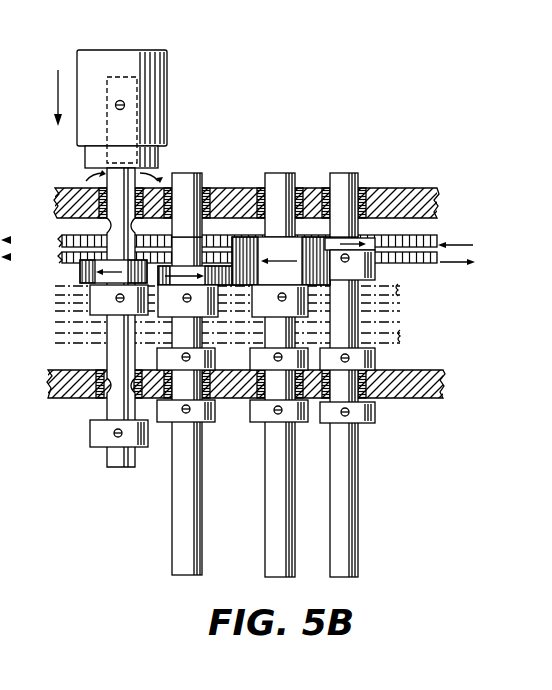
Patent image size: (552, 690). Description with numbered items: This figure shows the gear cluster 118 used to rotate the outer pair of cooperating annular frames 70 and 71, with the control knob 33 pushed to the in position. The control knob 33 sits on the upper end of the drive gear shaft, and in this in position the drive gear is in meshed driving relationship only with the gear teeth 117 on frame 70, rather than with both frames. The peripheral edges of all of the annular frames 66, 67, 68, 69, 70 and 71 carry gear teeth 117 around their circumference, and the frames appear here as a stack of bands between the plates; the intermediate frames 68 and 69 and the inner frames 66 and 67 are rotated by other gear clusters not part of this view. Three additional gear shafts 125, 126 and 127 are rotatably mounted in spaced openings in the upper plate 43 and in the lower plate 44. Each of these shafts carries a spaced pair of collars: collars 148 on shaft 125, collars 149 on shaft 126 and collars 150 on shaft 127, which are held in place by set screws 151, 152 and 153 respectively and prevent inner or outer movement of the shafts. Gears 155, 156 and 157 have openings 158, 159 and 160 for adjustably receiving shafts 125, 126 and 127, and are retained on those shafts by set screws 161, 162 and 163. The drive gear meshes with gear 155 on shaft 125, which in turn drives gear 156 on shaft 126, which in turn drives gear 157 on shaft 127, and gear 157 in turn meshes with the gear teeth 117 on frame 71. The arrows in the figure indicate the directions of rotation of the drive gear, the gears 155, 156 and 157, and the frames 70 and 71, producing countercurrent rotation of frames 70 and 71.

The control knob 33 is at (168, 118).
The gear cluster 118 is at (246, 120).
The gear 155 is at (222, 190).
The gear 156 is at (255, 190).
The gear 157 is at (376, 192).
The plate 43 is at (397, 190).
The plate 44 is at (397, 401).
The gear teeth 117 is at (66, 243).
The annular frame 71 is at (443, 226).
The annular frame 69 is at (60, 288).
The annular frame 68 is at (60, 313).
The annular frame 67 is at (60, 337).
The annular frame 66 is at (52, 350).
The annular frame 70 is at (400, 289).
The set screw 163 is at (350, 262).
The opening 160 is at (330, 300).
The opening 159 is at (392, 350).
The opening 158 is at (183, 307).
The set screw 161 is at (216, 312).
The set screw 162 is at (281, 293).
The set screw 152 is at (278, 356).
The set screw 151 is at (188, 412).
The collars 149 is at (258, 412).
The collars 150 is at (325, 360).
The set screw 153 is at (347, 364).
The collars 148 is at (165, 412).
The gear shaft 125 is at (200, 538).
The gear shaft 126 is at (289, 530).
The gear shaft 127 is at (352, 543).